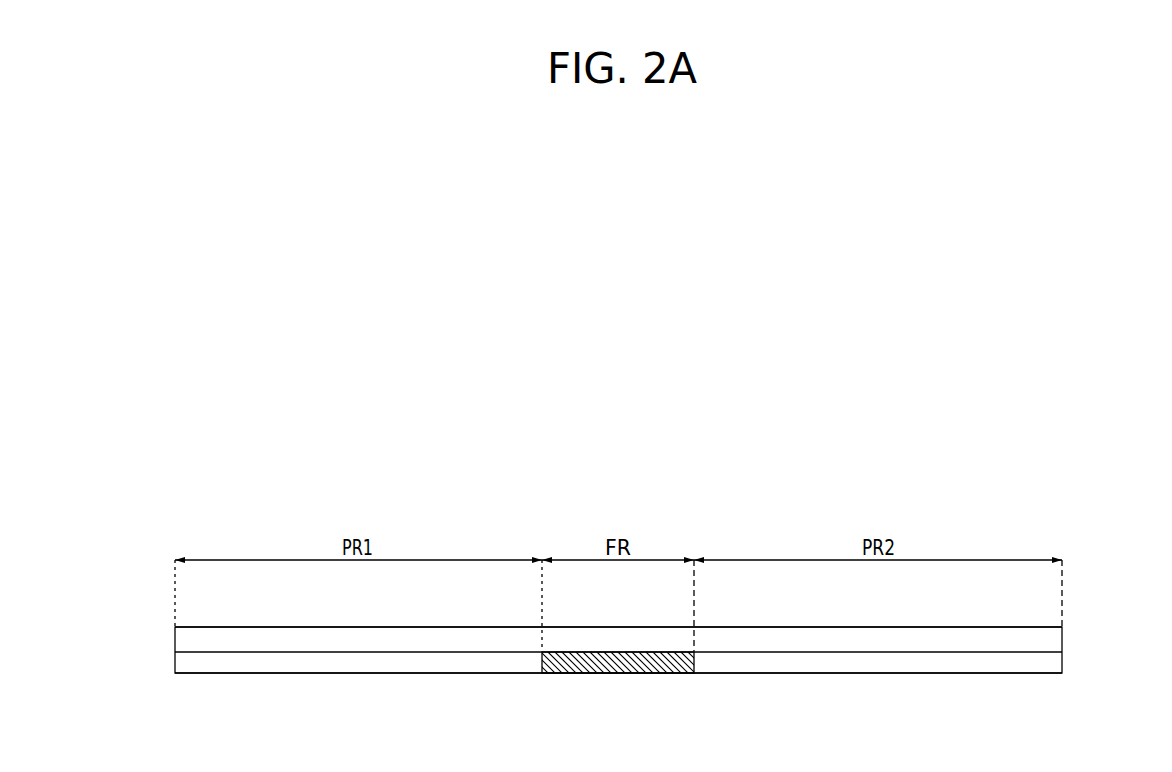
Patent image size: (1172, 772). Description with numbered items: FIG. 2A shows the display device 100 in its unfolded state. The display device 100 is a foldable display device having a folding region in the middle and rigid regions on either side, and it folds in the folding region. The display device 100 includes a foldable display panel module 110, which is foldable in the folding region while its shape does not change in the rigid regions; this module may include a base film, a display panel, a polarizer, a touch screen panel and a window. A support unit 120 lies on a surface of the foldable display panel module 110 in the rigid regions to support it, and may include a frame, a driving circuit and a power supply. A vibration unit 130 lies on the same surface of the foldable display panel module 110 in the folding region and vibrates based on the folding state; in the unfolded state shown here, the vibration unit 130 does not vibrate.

The display device 100 is at (676, 452).
The foldable display panel module 110 is at (1052, 637).
The support unit 120 is at (1052, 661).
The vibration unit 130 is at (621, 674).